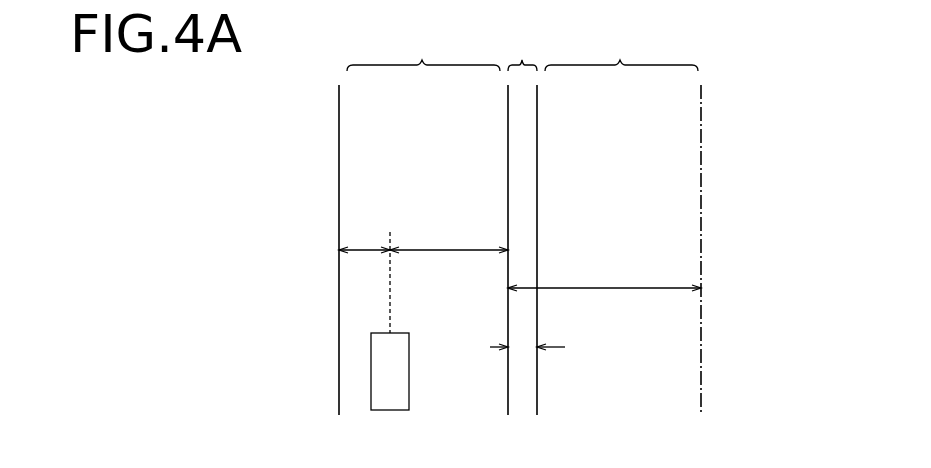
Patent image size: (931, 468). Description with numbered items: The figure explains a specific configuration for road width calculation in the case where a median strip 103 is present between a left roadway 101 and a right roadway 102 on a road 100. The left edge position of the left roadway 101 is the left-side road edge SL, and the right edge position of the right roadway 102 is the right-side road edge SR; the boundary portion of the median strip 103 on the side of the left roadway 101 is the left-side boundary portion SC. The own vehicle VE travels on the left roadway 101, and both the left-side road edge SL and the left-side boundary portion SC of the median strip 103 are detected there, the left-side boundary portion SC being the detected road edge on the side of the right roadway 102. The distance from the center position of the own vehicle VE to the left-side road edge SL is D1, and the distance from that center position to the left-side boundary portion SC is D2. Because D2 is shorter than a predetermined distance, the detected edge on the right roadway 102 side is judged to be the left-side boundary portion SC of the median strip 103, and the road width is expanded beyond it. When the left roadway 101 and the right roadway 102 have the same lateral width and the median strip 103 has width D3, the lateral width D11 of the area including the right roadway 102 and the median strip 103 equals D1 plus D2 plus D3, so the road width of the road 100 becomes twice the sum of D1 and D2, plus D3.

The road 100 is at (720, 78).
The left roadway 101 is at (423, 48).
The right roadway 102 is at (621, 48).
The median strip 103 is at (522, 48).
The left-side road edge SL is at (339, 138).
The left-side boundary portion SC is at (508, 138).
The right-side road edge SR is at (701, 138).
The own vehicle VE is at (409, 397).
The distance D1 is at (364, 235).
The distance D2 is at (449, 235).
The width of the median strip D3 is at (548, 348).
The lateral width of the area including the right roadway and the median strip D11 is at (604, 272).